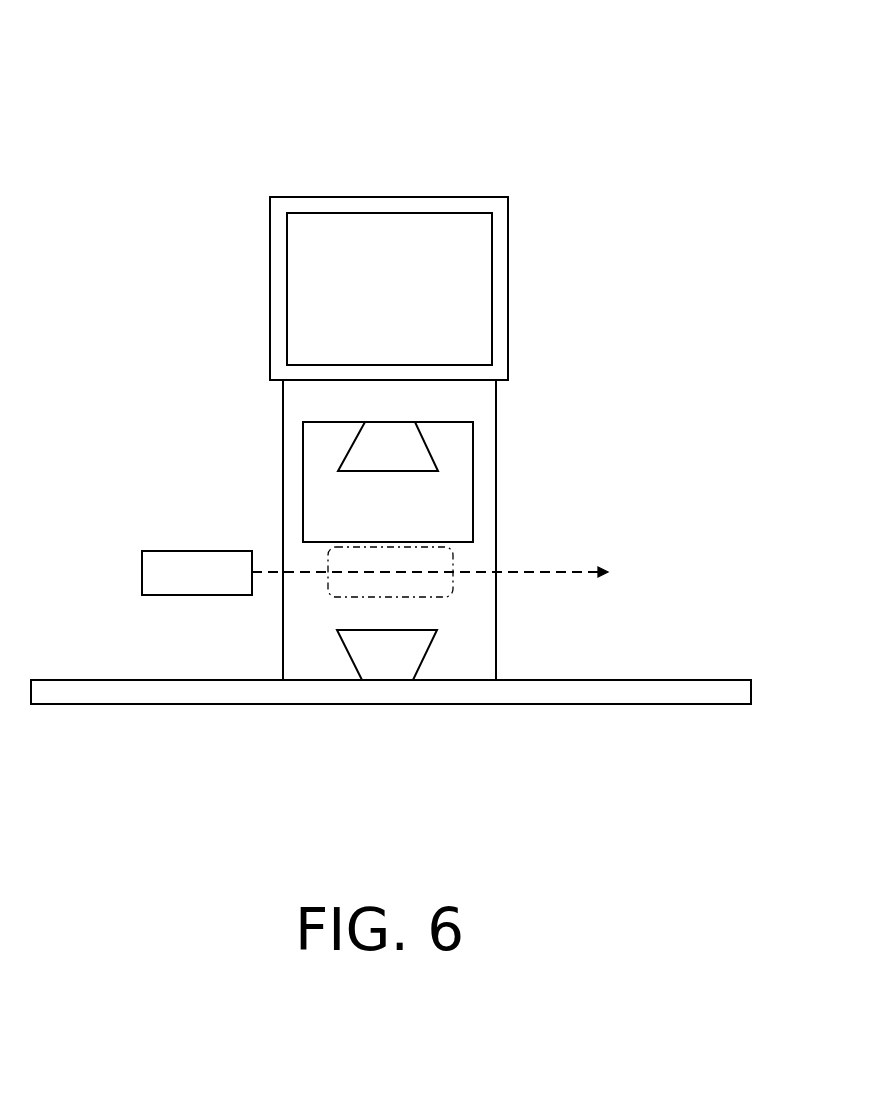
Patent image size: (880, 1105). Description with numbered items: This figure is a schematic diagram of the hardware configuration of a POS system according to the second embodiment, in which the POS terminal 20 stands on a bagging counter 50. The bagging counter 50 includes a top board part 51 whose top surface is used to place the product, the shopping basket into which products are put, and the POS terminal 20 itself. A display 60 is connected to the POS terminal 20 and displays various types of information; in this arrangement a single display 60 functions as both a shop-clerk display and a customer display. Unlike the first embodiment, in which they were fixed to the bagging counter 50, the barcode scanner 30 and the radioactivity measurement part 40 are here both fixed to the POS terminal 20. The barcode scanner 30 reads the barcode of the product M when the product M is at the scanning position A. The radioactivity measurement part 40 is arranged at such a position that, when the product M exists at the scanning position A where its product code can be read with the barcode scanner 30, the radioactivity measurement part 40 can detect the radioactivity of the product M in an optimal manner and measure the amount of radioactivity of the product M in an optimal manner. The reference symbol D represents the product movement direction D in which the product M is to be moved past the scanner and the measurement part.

The display 60 is at (415, 245).
The POS terminal 20 is at (482, 485).
The barcode scanner 30 is at (370, 447).
The radioactivity measurement part 40 is at (392, 652).
The product M is at (168, 570).
The product movement direction D is at (550, 575).
The scanning position A is at (344, 598).
The bagging counter 50 is at (559, 691).
The top board part 51 is at (648, 690).